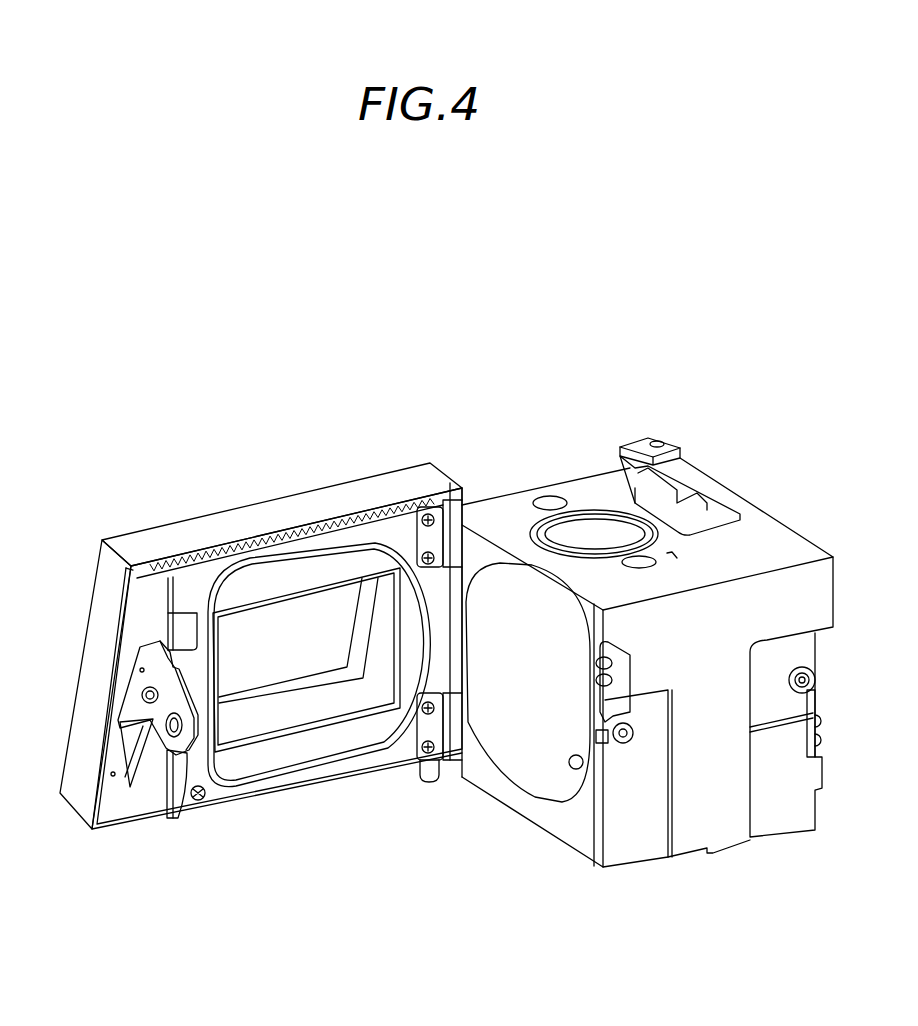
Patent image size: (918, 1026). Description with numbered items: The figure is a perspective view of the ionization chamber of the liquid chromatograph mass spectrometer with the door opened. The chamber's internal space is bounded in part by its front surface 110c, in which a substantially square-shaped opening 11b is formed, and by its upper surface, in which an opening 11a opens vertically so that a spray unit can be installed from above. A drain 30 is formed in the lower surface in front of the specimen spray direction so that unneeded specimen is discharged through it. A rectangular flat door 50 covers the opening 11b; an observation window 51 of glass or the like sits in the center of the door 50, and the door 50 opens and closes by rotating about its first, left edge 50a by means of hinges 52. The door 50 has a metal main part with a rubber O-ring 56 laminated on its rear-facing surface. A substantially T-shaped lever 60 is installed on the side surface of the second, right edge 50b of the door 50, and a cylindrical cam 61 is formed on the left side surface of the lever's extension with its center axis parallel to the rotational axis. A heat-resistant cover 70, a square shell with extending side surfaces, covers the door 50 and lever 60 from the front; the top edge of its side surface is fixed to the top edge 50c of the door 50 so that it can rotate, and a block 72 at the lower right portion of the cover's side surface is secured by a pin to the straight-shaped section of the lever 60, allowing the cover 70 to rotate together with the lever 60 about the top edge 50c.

The opening 11a is at (598, 530).
The opening 11b is at (522, 610).
The front surface 110c is at (484, 547).
The drain 30 is at (570, 760).
The door 50 is at (228, 801).
The first edge 50a is at (442, 613).
The second edge 50b is at (150, 577).
The top edge 50c is at (279, 530).
The observation window 51 is at (287, 660).
The hinges 52 is at (422, 505).
The rubber O-ring 56 is at (358, 762).
The lever 60 is at (130, 707).
The cam 61 is at (177, 813).
The heat-resistant cover 70 is at (204, 543).
The block 72 is at (108, 803).